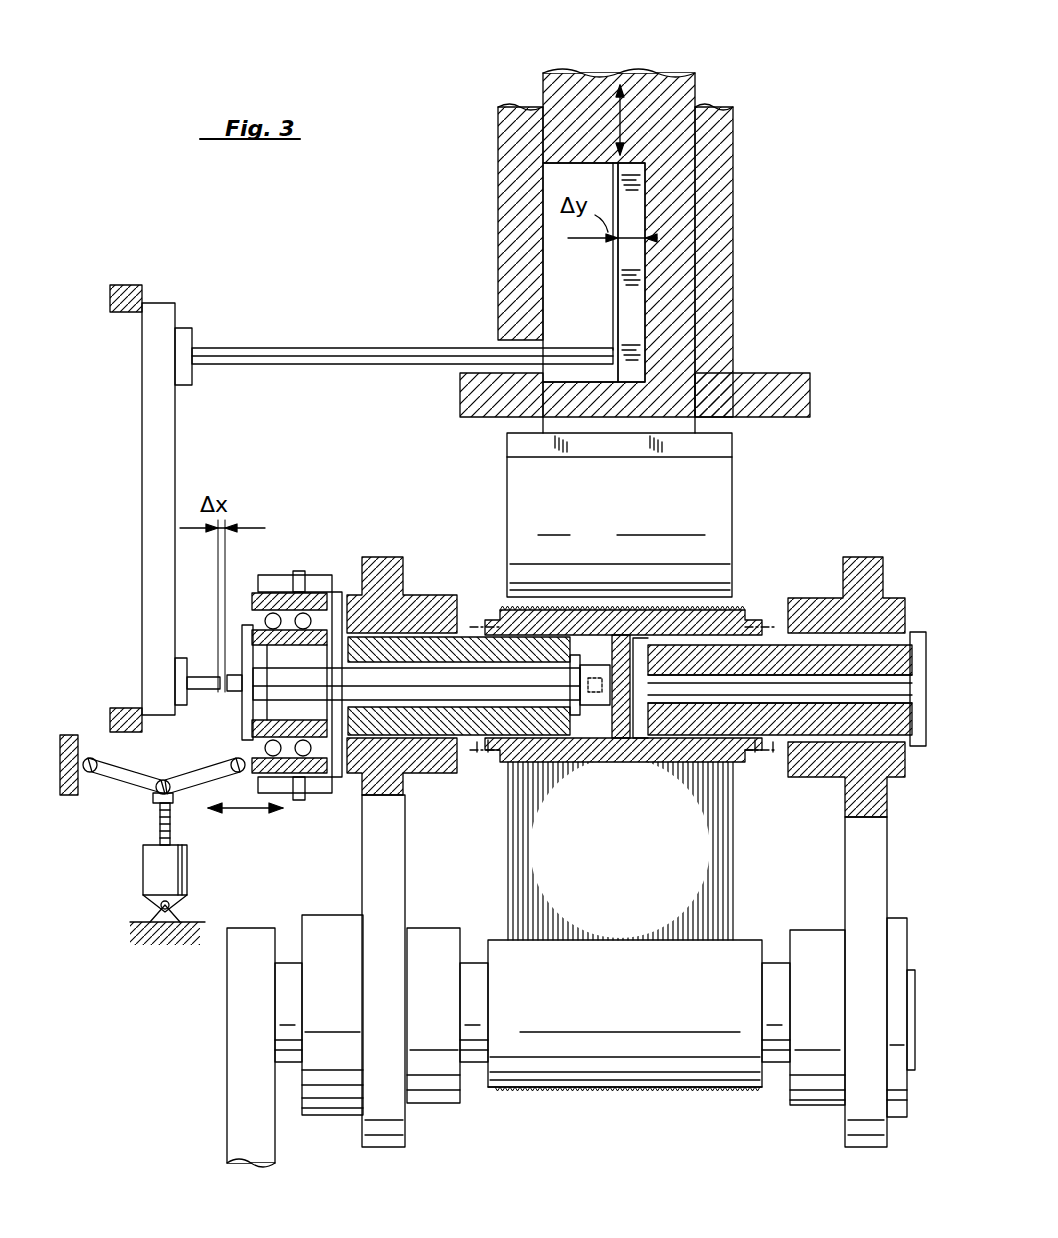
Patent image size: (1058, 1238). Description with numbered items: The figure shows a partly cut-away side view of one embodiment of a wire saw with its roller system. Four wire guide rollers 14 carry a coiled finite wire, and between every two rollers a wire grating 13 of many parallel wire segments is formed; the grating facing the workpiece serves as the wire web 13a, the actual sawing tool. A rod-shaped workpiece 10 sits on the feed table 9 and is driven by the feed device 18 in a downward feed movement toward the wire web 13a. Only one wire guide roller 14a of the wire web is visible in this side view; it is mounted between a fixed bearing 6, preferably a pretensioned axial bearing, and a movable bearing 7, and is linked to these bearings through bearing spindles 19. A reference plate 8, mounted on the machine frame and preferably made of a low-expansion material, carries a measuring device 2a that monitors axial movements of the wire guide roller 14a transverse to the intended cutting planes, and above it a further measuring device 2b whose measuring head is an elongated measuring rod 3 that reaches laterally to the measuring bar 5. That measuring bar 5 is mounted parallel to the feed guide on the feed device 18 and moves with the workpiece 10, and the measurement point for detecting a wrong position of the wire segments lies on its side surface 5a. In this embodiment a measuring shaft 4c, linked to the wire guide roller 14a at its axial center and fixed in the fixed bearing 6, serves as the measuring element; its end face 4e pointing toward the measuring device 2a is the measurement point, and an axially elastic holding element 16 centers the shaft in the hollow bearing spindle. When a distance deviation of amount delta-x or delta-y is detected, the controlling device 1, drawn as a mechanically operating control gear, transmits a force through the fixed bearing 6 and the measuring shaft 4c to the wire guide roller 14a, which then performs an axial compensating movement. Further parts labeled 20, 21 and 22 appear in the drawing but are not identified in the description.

The controlling device 1 is at (155, 825).
The measuring device 2a is at (180, 677).
The further measuring device 2b is at (183, 335).
The measuring rod 3 is at (332, 356).
The measuring shaft 4c is at (430, 680).
The end face 4e is at (225, 690).
The measuring bar 5 is at (637, 262).
The side surface 5a is at (615, 298).
The fixed bearing 6 is at (305, 600).
The movable bearing 7 is at (822, 765).
The reference plate 8 is at (165, 438).
The feed table 9 is at (727, 443).
The workpiece 10 is at (722, 515).
The wire grating 13 is at (722, 903).
The wire web 13a is at (713, 607).
The wire guide rollers 14 is at (508, 1080).
The wire guide roller 14a is at (505, 620).
The axially elastic holding element 16 is at (590, 660).
The feed device 18 is at (655, 97).
The bearing spindles 19 is at (372, 798).
The groove 20 is at (490, 758).
The ring 21 is at (477, 750).
The base support 22 is at (165, 937).